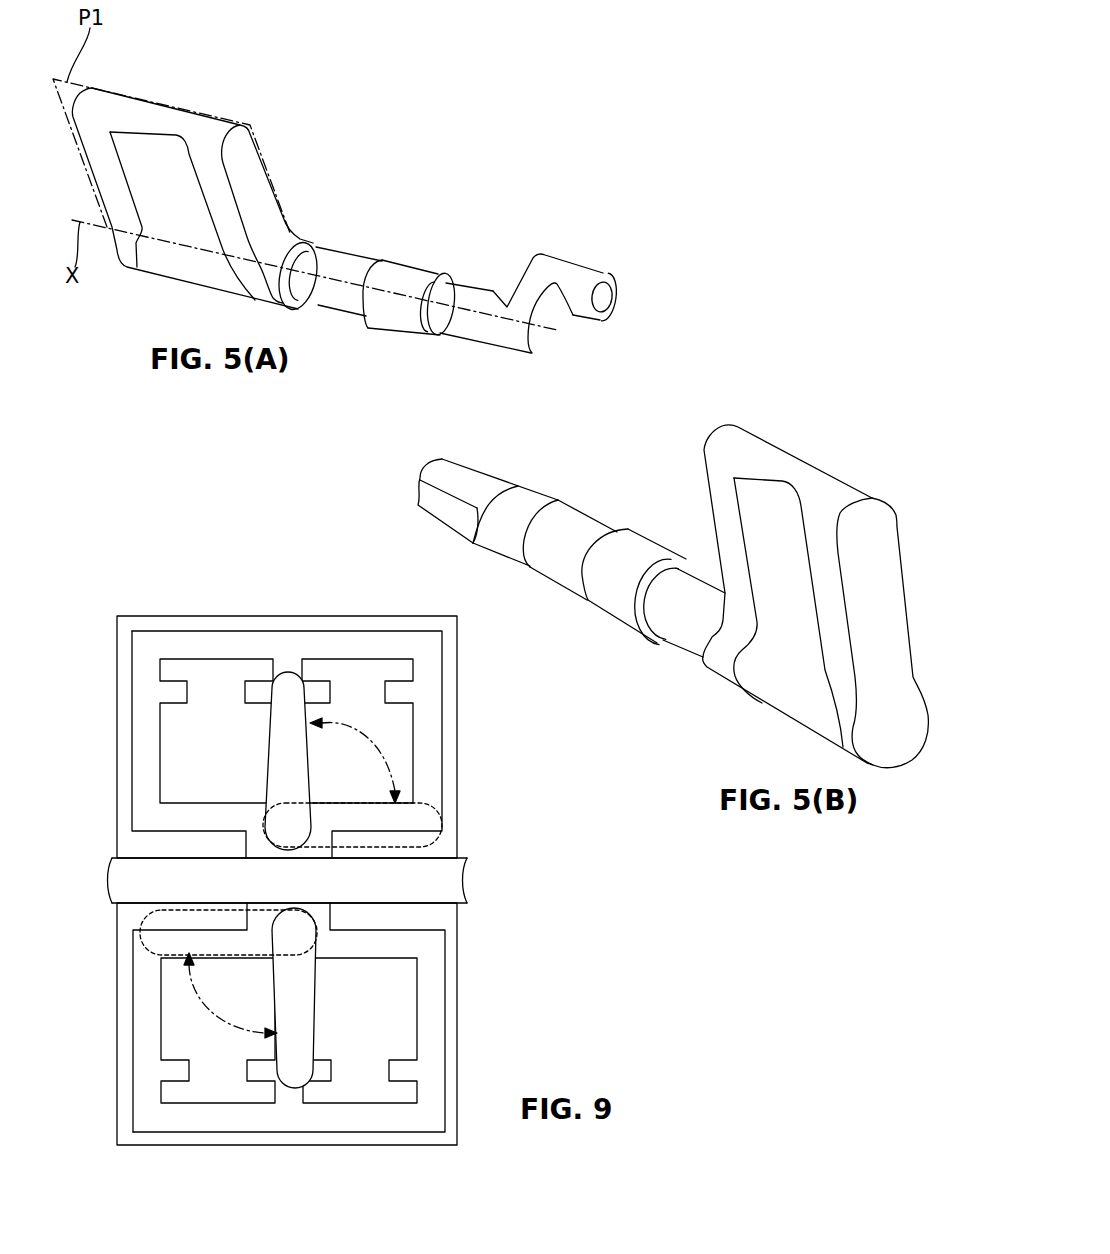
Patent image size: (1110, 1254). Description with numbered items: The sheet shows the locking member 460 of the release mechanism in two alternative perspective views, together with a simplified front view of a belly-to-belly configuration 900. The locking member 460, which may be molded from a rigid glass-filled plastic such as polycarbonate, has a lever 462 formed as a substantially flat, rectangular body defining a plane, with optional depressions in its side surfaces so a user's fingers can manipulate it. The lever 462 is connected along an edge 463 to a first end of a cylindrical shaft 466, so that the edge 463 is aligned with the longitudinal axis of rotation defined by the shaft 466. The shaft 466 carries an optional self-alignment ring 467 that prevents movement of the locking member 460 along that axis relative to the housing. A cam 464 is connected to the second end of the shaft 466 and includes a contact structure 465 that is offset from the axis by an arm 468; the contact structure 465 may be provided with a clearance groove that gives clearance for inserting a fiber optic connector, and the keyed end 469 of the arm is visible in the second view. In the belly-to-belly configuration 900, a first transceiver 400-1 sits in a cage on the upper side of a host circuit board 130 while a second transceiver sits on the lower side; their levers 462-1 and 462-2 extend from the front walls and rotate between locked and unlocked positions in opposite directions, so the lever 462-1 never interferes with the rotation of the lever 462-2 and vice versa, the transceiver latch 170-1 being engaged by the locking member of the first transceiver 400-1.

In FIG. 5A, the locking member 460 is at (298, 102).
In FIG. 5B, the locking member 460 is at (836, 432).
In FIG. 5A, the lever 462 is at (173, 123).
In FIG. 5B, the lever 462 is at (772, 695).
In FIG. 5A, the edge 463 is at (183, 273).
In FIG. 5A, the cam 464 is at (647, 336).
In FIG. 5A, the contact structure 465 is at (572, 302).
In FIG. 5A, the shaft 466 is at (331, 278).
In FIG. 5B, the shaft 466 is at (572, 527).
In FIG. 5A, the self-alignment ring 467 is at (405, 280).
In FIG. 5A, the arm 468 is at (553, 328).
In FIG. 5B, the arm 468 is at (463, 477).
In FIG. 5B, the keyed end 469 is at (424, 494).
In FIG. 9, the belly-to-belly configuration 900 is at (86, 606).
In FIG. 9, the first transceiver 400-1 is at (242, 647).
In FIG. 9, the housing 170-1 is at (340, 620).
In FIG. 9, the lever 462-1 is at (280, 768).
In FIG. 9, the host circuit board 130 is at (313, 893).
In FIG. 9, the lever 462-2 is at (288, 1057).